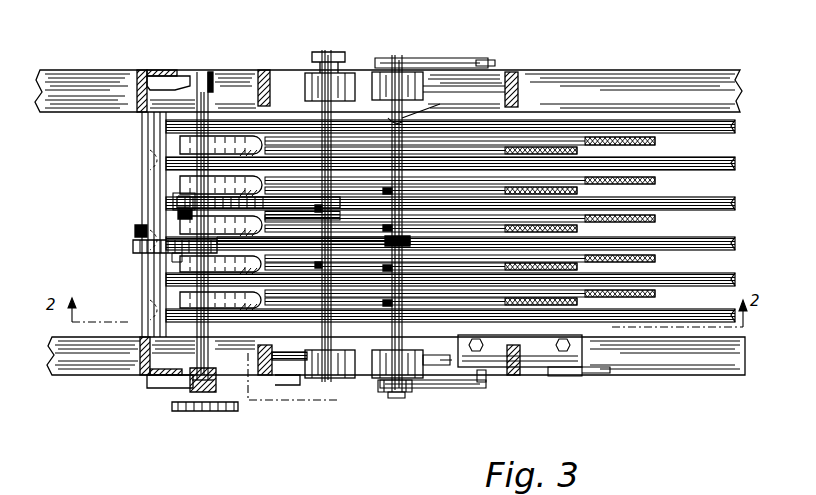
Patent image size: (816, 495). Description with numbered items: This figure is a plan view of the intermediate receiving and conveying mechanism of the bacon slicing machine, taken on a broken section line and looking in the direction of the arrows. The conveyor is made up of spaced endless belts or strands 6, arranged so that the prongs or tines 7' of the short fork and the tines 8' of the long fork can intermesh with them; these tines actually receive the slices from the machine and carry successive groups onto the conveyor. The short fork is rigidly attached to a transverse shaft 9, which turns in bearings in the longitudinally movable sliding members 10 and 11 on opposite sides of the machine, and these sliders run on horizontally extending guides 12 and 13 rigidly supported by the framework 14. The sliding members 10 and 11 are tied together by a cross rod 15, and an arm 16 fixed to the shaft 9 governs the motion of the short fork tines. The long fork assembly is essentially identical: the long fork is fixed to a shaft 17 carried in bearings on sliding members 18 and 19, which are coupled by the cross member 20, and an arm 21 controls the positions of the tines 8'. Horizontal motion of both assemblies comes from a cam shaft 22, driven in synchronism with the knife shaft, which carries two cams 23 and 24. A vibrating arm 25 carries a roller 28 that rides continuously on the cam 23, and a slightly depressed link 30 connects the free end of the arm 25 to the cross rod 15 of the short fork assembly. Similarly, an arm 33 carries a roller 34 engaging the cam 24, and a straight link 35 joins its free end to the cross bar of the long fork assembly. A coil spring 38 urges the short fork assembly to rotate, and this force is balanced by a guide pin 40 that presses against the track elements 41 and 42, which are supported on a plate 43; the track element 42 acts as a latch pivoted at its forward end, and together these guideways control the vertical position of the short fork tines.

The endless belts or strands 6 is at (715, 240).
The prongs or tines of the short fork 7' is at (481, 175).
The prongs or tines of the long fork 8' is at (488, 169).
The shaft 9 is at (398, 392).
The sliding member 10 is at (412, 78).
The sliding member 11 is at (410, 386).
The guide 12 is at (484, 82).
The guide 13 is at (288, 385).
The framework 14 is at (255, 400).
The cross rod 15 is at (405, 120).
The arm 16 is at (430, 386).
The shaft 17 is at (328, 52).
The sliding member 18 is at (308, 380).
The sliding member 19 is at (310, 78).
The cross member or shaft 20 is at (320, 280).
The arm 21 is at (372, 58).
The cam shaft 22 is at (214, 100).
The cam 23 is at (177, 250).
The cam 24 is at (245, 196).
The vibrating arm 25 is at (135, 231).
The roller 28 is at (133, 245).
The link 30 is at (276, 240).
The arm 33 is at (178, 213).
The roller 34 is at (176, 196).
The link 35 is at (278, 213).
The coil spring 38 is at (388, 340).
The guide pin 40 is at (488, 380).
The track element 41 is at (566, 376).
The track element 42 is at (540, 375).
The plate 43 is at (592, 372).